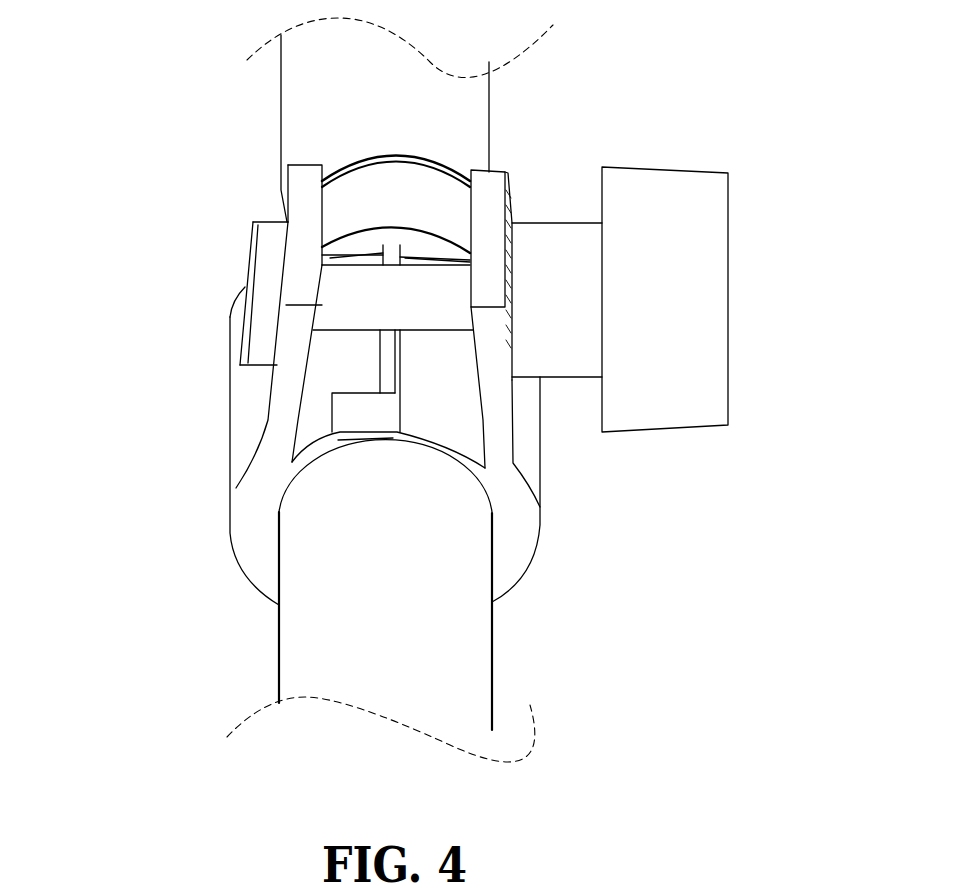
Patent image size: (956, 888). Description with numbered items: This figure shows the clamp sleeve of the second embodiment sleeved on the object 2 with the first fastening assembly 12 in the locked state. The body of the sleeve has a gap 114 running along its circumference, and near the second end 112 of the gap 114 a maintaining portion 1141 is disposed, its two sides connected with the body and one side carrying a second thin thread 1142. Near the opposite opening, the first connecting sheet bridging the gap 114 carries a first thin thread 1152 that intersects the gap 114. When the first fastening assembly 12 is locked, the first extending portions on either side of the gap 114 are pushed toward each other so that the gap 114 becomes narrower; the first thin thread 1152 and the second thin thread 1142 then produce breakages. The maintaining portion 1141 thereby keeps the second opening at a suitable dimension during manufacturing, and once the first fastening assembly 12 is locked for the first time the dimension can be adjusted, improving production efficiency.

The object 2 is at (460, 661).
The first fastening assembly 12 is at (250, 294).
The second end 112 is at (540, 527).
The gap 114 is at (380, 367).
The maintaining portion 1141 is at (350, 425).
The second thin thread 1142 is at (332, 403).
The first thin thread 1152 is at (350, 233).